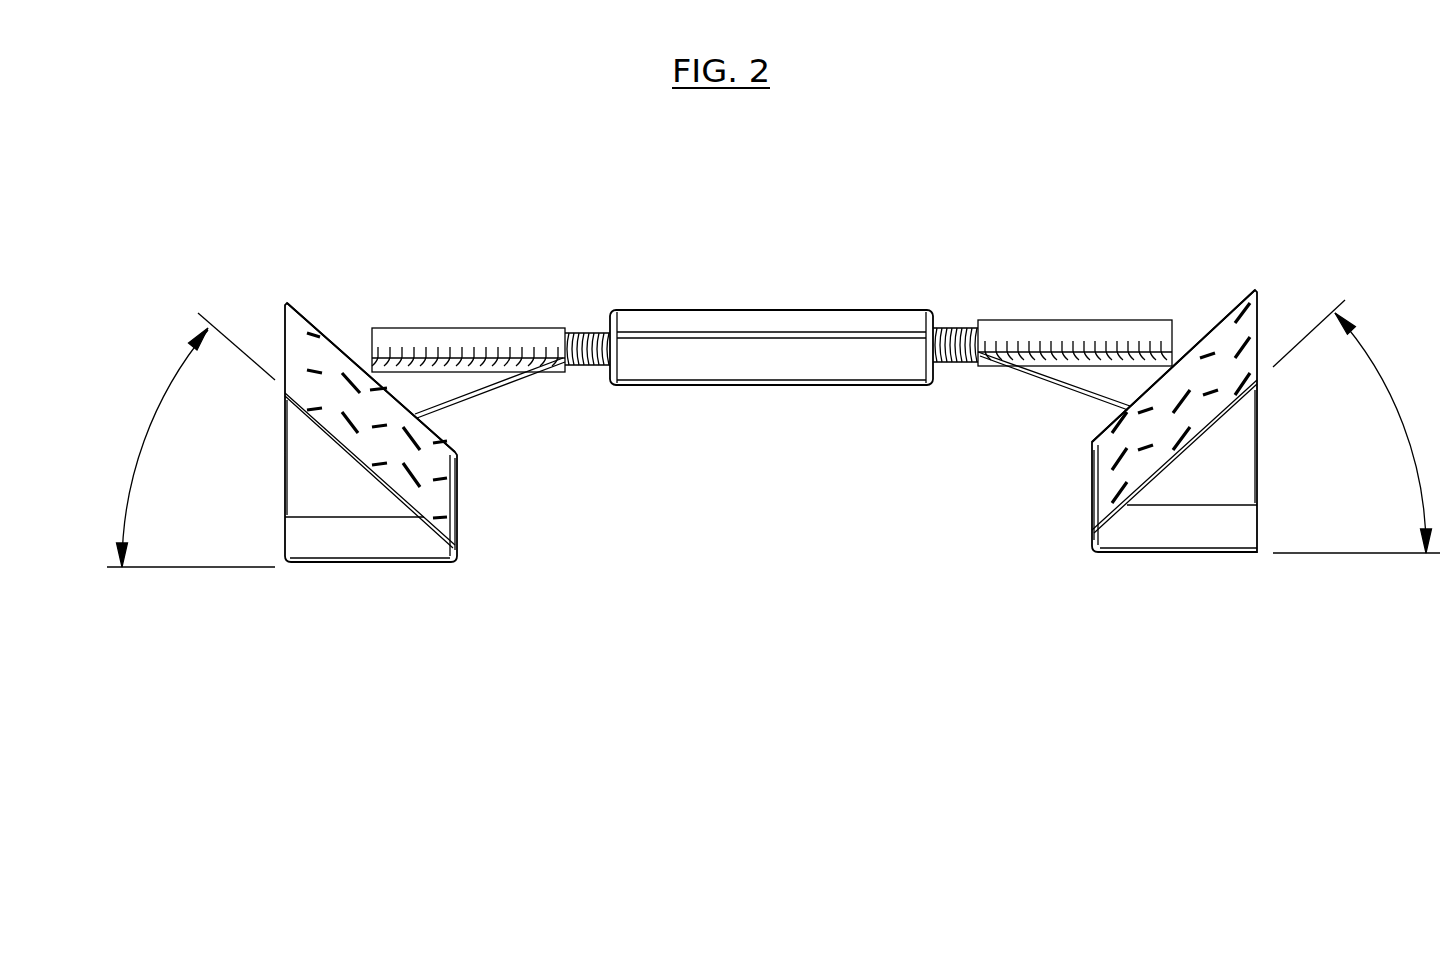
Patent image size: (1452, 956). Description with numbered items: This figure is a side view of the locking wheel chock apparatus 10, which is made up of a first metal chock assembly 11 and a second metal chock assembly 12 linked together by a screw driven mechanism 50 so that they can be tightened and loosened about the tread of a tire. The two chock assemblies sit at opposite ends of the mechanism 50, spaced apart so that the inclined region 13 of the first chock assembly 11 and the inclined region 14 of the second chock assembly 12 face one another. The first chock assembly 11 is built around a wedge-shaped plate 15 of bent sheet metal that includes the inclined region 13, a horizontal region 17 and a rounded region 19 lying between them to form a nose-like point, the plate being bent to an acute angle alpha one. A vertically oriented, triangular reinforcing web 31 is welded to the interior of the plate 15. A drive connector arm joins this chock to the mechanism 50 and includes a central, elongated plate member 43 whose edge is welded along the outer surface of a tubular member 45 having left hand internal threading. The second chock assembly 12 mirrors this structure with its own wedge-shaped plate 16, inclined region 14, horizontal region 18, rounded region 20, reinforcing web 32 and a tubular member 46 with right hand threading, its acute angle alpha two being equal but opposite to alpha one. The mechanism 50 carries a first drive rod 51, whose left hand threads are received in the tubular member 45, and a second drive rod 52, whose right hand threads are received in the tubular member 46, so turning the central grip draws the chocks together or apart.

The locking wheel chock apparatus 10 is at (668, 635).
The first metal chock assembly 11 is at (1292, 448).
The second metal chock assembly 12 is at (268, 461).
The inclined region 13 is at (1226, 338).
The inclined region 14 is at (332, 358).
The wedge-shaped plate 15 is at (1133, 572).
The wedge-shaped plate 16 is at (386, 585).
The horizontal region 17 is at (1200, 522).
The horizontal region 18 is at (333, 532).
The rounded region 19 is at (1093, 512).
The rounded region 20 is at (457, 513).
The reinforcing web 31 is at (1242, 478).
The reinforcing web 32 is at (305, 483).
The plate member 43 is at (1103, 367).
The tubular member 45 is at (1053, 320).
The tubular member 46 is at (472, 327).
The screw driven mechanism 50 is at (763, 400).
The first drive rod 51 is at (955, 364).
The second drive rod 52 is at (590, 367).